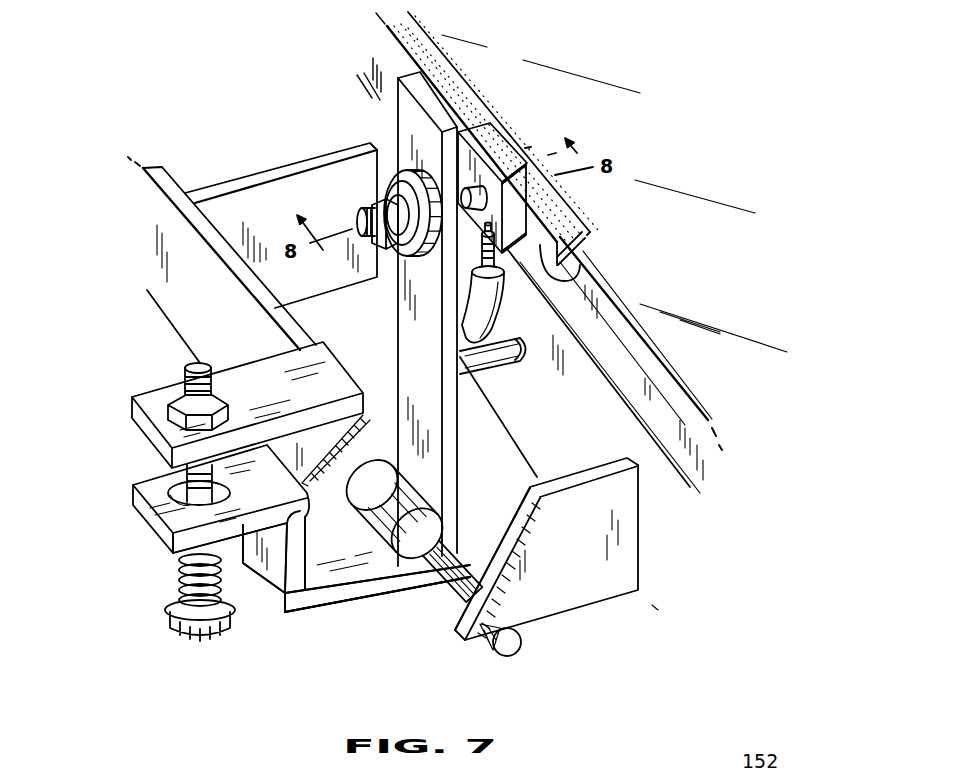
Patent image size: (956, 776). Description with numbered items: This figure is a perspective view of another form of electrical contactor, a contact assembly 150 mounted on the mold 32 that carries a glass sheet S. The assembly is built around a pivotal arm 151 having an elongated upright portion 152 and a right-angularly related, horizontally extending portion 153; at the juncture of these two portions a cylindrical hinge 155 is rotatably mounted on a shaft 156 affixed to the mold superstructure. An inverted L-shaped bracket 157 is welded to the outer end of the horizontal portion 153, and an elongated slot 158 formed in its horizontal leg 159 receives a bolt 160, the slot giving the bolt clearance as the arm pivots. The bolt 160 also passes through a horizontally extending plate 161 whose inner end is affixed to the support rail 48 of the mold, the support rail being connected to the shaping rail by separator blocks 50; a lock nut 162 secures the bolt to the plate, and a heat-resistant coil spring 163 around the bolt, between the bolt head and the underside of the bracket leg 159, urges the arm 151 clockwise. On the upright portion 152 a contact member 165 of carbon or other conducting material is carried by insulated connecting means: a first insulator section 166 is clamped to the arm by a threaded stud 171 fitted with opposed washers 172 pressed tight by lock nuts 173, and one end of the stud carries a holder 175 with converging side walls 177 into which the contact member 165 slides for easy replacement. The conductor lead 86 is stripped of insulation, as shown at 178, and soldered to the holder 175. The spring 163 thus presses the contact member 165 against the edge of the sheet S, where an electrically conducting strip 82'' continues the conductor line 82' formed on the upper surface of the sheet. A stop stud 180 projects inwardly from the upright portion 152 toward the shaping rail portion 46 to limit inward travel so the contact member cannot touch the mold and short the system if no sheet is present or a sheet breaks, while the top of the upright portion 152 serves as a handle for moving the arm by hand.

The glass sheet S is at (683, 307).
The mold 32 is at (572, 620).
The shaping rail portion 46 is at (578, 447).
The support rail 48 is at (192, 292).
The separator blocks 50 is at (228, 190).
The conductor line 82' is at (614, 236).
The electrically conducting strip 82'' is at (597, 263).
The conductor lead 86 is at (497, 354).
The contact assembly 150 is at (284, 648).
The pivotal arm 151 is at (371, 600).
The upright portion 152 is at (453, 440).
The horizontal portion 153 is at (338, 575).
The cylindrical hinge 155 is at (373, 500).
The shaft 156 is at (440, 573).
The inverted L-shaped bracket 157 is at (279, 570).
The elongated slot 158 is at (172, 530).
The horizontal leg 159 is at (142, 490).
The bolt 160 is at (195, 482).
The horizontally extending plate 161 is at (143, 398).
The lock nut 162 is at (222, 395).
The heat-resistant coil spring 163 is at (178, 585).
The contact member 165 is at (493, 138).
The first insulator section 166 is at (393, 166).
The threaded stud 171 is at (360, 220).
The washers 172 is at (394, 246).
The lock nuts 173 is at (396, 258).
The holder 175 is at (510, 274).
The converging side walls 177 is at (465, 128).
The stripped lead end 178 is at (474, 279).
The stud 180 is at (528, 355).